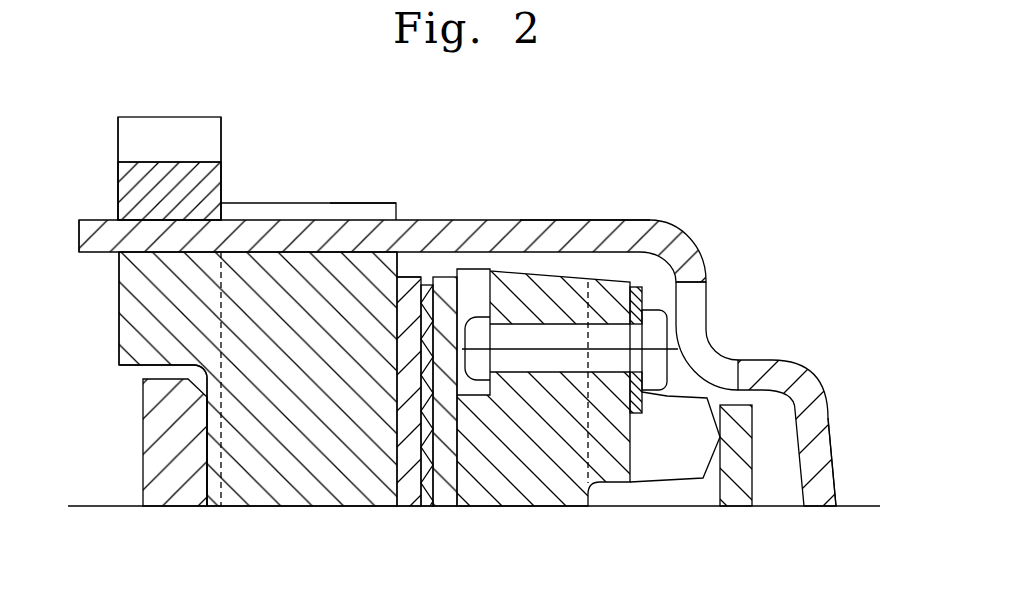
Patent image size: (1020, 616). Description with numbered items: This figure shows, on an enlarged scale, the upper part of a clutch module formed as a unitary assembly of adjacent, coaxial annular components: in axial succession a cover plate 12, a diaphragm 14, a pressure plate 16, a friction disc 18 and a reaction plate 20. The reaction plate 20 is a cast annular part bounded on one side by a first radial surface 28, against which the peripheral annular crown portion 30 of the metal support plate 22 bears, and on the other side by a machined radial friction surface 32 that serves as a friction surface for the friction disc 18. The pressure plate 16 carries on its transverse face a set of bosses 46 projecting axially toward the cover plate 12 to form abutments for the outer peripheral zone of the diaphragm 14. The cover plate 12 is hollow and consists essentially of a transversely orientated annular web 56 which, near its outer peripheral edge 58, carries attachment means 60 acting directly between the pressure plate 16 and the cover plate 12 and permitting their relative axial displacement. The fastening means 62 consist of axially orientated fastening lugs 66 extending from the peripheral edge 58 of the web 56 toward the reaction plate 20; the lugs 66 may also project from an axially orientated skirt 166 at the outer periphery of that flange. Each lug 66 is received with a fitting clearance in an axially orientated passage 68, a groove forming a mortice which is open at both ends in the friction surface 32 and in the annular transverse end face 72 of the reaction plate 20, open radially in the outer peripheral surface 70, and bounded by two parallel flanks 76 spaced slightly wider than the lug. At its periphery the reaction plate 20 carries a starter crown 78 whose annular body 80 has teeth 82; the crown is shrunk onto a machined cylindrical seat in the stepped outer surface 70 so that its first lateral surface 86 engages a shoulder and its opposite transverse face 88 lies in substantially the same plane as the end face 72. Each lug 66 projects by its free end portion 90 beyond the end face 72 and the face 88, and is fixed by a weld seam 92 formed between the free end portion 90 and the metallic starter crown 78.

The cover plate 12 is at (840, 381).
The diaphragm 14 is at (768, 494).
The pressure plate 16 is at (532, 492).
The friction disc 18 is at (447, 526).
The reaction plate 20 is at (317, 490).
The support plate 22 is at (122, 414).
The first radial surface 28 is at (207, 463).
The peripheral annular crown portion 30 is at (177, 482).
The radial friction surface 32 is at (398, 260).
The bosses 46 is at (675, 460).
The annular web 56 is at (815, 493).
The outer peripheral edge 58 is at (700, 263).
The attachment means 60 is at (699, 333).
The fastening means 62 is at (603, 195).
The fastening lugs 66 is at (547, 235).
The axially orientated passage 68 is at (356, 205).
The outer peripheral surface 70 is at (300, 202).
The annular transverse end face 72 is at (119, 330).
The flanks 76 is at (385, 210).
The starter crown 78 is at (236, 122).
The body 80 is at (202, 165).
The teeth 82 is at (148, 132).
The first lateral surface 86 is at (222, 181).
The transverse face 88 is at (118, 167).
The free end portion 90 is at (100, 247).
The weld seam 92 is at (110, 218).
The skirt 166 is at (630, 220).